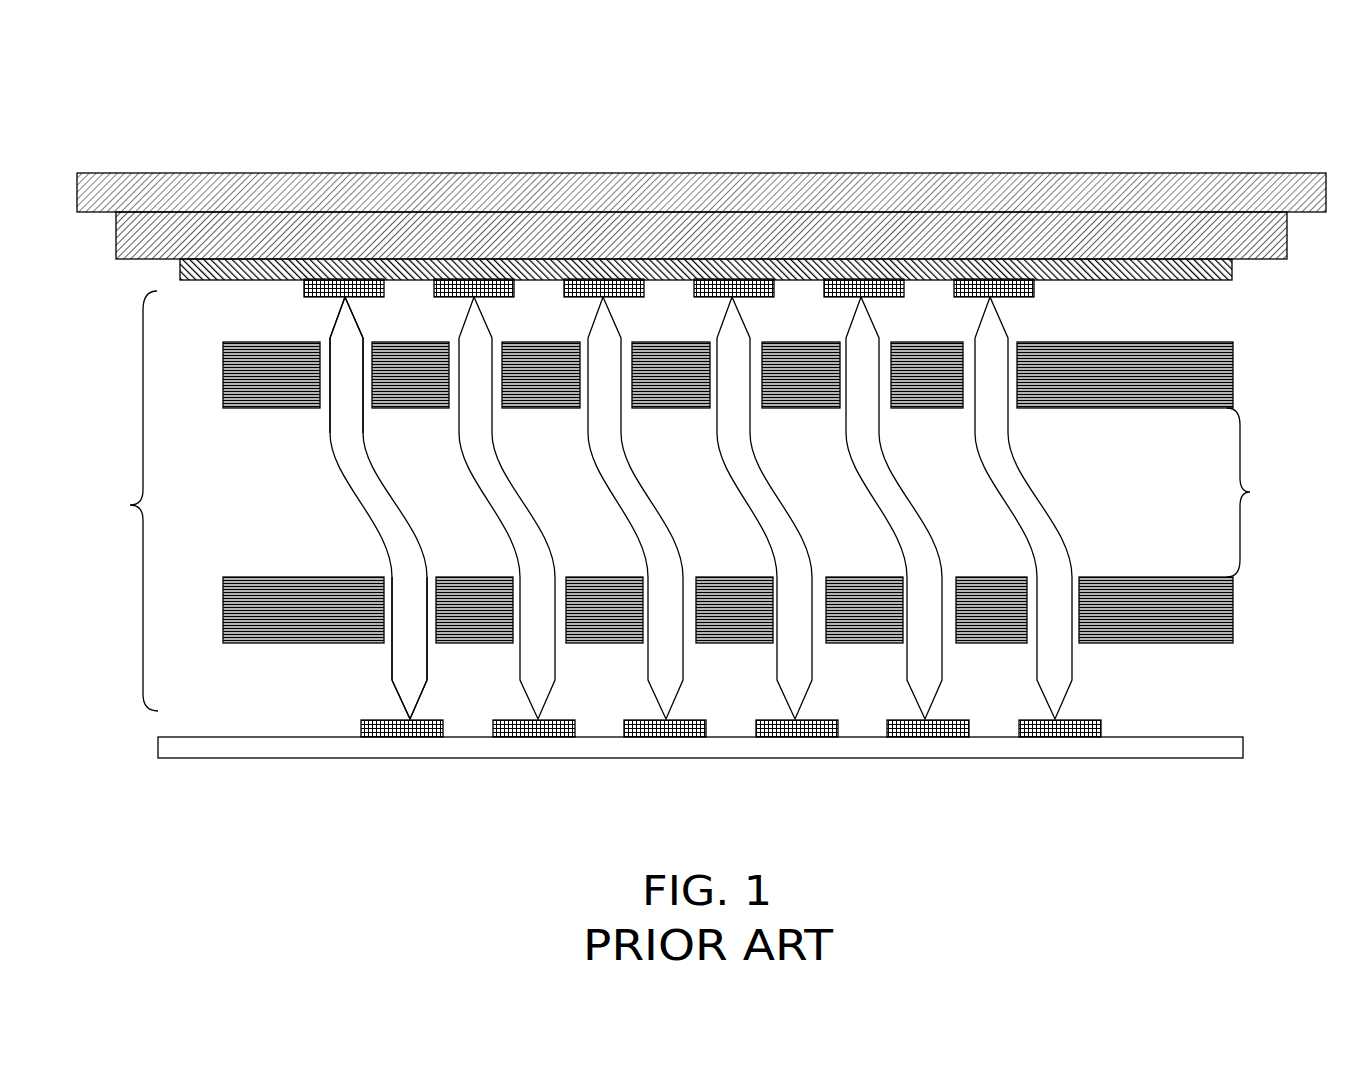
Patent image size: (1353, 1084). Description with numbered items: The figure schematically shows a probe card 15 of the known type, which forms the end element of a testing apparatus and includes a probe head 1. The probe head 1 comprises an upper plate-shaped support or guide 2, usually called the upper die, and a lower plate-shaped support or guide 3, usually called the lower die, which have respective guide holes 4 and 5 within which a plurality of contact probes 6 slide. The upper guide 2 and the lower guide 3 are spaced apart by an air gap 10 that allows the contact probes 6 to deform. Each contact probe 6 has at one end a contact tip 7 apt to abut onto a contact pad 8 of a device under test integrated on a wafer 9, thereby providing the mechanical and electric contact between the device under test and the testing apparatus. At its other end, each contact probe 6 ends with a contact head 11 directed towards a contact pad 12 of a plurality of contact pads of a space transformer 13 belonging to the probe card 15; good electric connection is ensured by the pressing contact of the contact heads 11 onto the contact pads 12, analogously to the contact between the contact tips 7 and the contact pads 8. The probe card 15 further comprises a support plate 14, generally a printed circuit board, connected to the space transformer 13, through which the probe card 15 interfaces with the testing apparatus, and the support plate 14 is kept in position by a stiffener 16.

The probe head 1 is at (128, 501).
The upper plate-shaped support or guide 2 is at (222, 388).
The lower plate-shaped support or guide 3 is at (222, 624).
The guide holes 4 is at (327, 397).
The guide holes 5 is at (430, 587).
The contact probes 6 is at (384, 526).
The contact tip 7 is at (408, 694).
The contact pad 8 is at (389, 731).
The wafer 9 is at (260, 749).
The air gap 10 is at (1255, 492).
The contact head 11 is at (346, 333).
The contact pad 12 is at (376, 293).
The space transformer 13 is at (1182, 272).
The support plate 14 is at (1143, 228).
The probe card 15 is at (176, 144).
The stiffener 16 is at (740, 190).